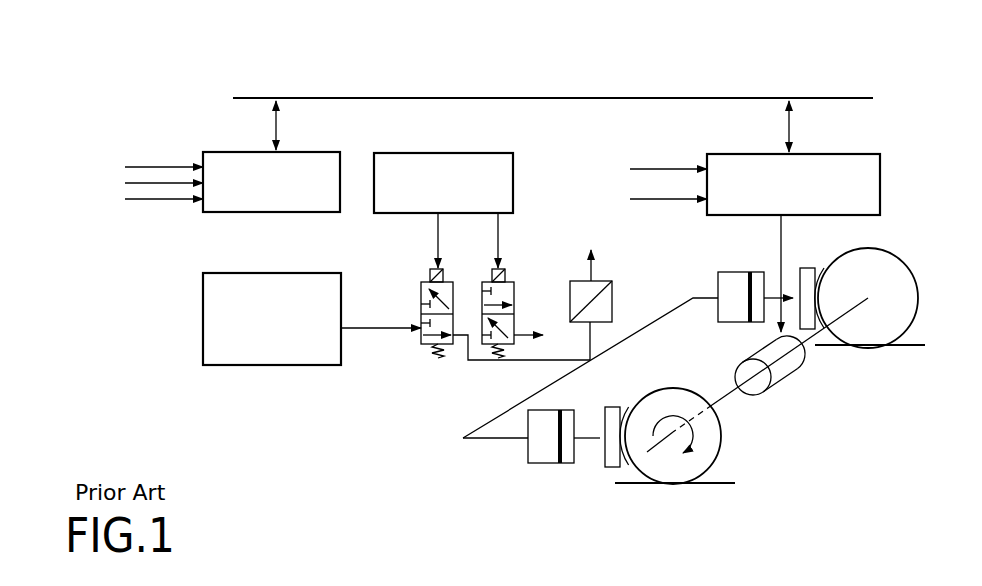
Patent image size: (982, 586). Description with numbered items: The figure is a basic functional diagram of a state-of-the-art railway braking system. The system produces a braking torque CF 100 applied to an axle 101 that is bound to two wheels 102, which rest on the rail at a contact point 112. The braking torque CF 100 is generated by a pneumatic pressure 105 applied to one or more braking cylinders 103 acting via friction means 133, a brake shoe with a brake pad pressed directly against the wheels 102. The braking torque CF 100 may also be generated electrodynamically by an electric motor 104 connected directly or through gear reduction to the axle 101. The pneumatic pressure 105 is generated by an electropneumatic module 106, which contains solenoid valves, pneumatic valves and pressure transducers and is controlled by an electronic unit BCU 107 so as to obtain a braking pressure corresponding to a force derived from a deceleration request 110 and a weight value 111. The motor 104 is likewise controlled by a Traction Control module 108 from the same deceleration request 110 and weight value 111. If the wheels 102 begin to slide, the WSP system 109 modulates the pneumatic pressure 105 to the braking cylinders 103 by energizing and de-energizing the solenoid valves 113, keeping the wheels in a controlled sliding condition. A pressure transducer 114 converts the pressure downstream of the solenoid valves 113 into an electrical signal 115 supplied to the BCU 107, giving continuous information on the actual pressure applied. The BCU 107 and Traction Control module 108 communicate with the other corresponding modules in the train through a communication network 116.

The braking torque CF 100 is at (722, 442).
The axle 101 is at (723, 395).
The wheels 102 is at (898, 302).
The braking cylinder 103 is at (735, 312).
The electric motor 104 is at (790, 385).
The pneumatic pressure 105 is at (375, 330).
The electropneumatic module 106 is at (275, 340).
The electronic unit BCU 107 is at (317, 170).
The Traction Control module 108 is at (867, 162).
The WSP system 109 is at (515, 180).
The deceleration request 110 is at (125, 165).
The weight value 111 is at (125, 198).
The contact point 112 is at (872, 345).
The solenoid valves 113 is at (488, 352).
The pressure transducer 114 is at (613, 310).
The electrical signal 115 is at (125, 182).
The communication network 116 is at (528, 97).
The friction means 133 is at (613, 465).